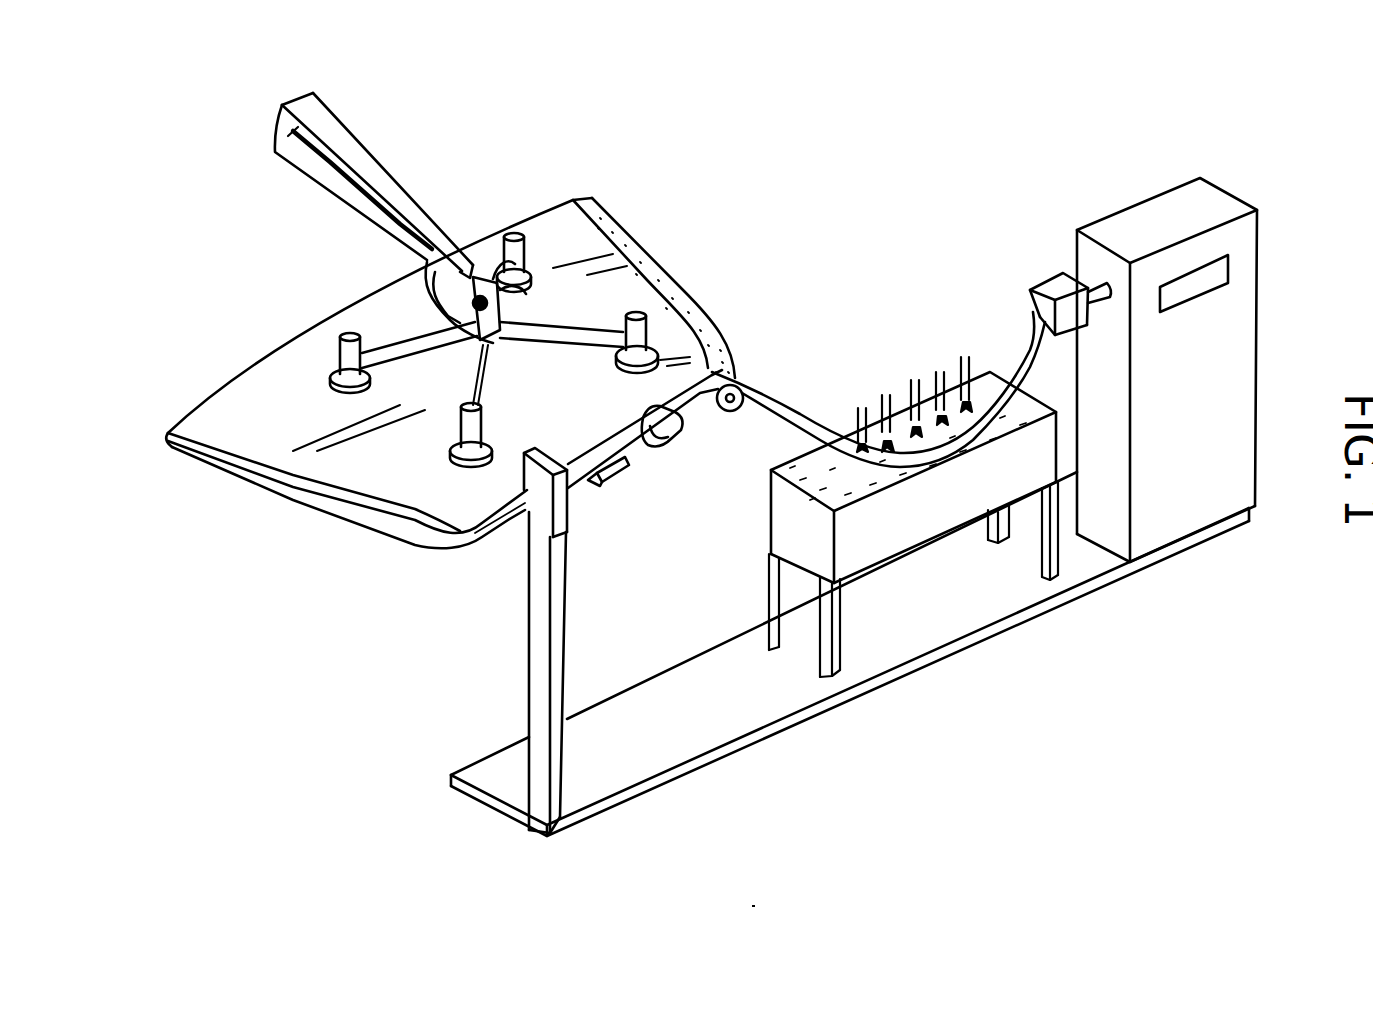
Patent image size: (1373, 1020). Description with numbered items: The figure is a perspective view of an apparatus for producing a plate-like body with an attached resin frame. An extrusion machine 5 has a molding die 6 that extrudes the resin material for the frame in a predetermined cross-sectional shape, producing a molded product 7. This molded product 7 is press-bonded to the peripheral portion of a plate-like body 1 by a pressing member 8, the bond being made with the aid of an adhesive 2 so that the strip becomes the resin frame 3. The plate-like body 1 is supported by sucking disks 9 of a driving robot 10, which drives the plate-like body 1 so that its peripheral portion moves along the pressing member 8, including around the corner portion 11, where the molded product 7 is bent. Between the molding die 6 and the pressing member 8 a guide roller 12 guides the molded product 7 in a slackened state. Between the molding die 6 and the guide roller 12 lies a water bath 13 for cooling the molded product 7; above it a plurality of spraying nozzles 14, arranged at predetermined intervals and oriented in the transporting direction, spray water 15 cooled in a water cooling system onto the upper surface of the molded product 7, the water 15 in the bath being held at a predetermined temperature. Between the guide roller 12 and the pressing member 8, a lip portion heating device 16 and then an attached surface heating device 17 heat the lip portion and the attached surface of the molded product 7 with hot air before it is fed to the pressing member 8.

The plate-like body 1 is at (600, 280).
The adhesive 2 is at (683, 283).
The resin frame 3 is at (297, 496).
The extrusion machine 5 is at (1138, 218).
The molding die 6 is at (1055, 287).
The molded product 7 is at (790, 411).
The pressing member 8 is at (543, 457).
The sucking disks 9 is at (333, 373).
The driving robot 10 is at (402, 178).
The corner portion 11 is at (435, 552).
The guide roller 12 is at (723, 417).
The water bath 13 is at (792, 510).
The spraying nozzles 14 is at (965, 356).
The water 15 is at (860, 480).
The lip portion heating device 16 is at (674, 448).
The attached surface heating device 17 is at (612, 487).